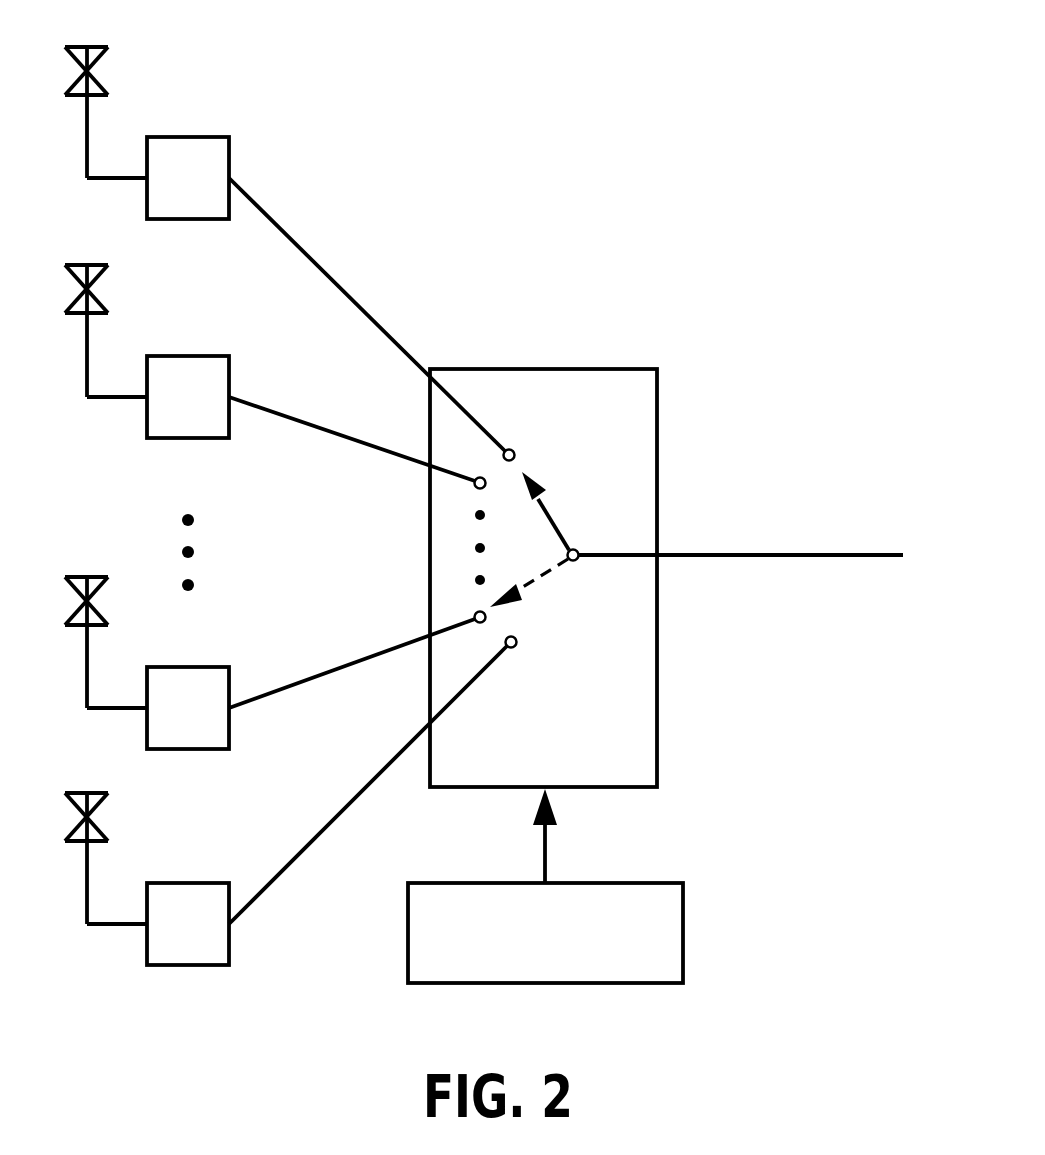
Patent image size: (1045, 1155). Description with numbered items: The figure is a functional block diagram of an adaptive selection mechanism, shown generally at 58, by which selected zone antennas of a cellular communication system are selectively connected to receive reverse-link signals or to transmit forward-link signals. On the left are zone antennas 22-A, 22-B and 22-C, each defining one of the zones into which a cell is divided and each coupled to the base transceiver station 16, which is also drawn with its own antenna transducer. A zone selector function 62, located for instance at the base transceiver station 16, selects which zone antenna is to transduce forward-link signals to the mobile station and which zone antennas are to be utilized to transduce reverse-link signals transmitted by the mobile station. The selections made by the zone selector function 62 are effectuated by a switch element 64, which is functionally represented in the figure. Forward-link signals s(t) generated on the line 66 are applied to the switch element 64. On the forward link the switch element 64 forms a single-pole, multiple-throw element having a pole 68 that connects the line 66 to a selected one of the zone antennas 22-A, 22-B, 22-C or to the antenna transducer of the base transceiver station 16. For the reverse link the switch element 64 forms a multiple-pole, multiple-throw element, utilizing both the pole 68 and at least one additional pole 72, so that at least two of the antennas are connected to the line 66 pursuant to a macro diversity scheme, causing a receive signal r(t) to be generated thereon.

The adaptive selection mechanism 58 is at (491, 37).
The zone antenna 22-A is at (182, 137).
The zone antenna 22-B is at (180, 356).
The zone antenna 22-C is at (180, 667).
The base transceiver station 16 is at (180, 883).
The switch element 64 is at (588, 369).
The pole 68 is at (552, 520).
The additional pole 72 is at (548, 575).
The line 66 is at (853, 556).
The zone selector function 62 is at (683, 913).